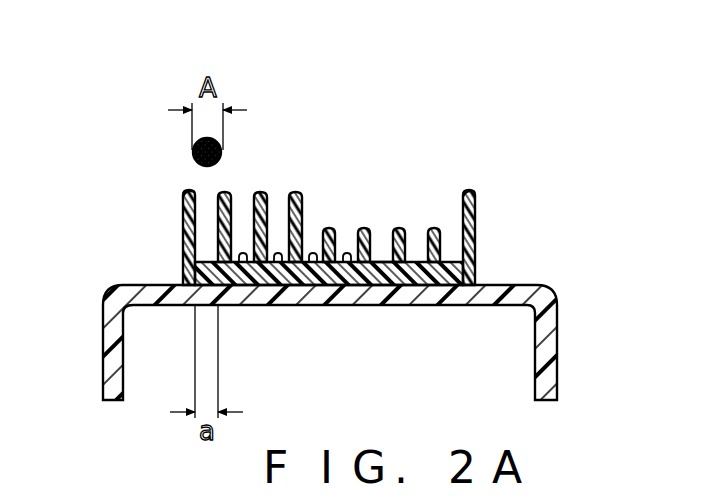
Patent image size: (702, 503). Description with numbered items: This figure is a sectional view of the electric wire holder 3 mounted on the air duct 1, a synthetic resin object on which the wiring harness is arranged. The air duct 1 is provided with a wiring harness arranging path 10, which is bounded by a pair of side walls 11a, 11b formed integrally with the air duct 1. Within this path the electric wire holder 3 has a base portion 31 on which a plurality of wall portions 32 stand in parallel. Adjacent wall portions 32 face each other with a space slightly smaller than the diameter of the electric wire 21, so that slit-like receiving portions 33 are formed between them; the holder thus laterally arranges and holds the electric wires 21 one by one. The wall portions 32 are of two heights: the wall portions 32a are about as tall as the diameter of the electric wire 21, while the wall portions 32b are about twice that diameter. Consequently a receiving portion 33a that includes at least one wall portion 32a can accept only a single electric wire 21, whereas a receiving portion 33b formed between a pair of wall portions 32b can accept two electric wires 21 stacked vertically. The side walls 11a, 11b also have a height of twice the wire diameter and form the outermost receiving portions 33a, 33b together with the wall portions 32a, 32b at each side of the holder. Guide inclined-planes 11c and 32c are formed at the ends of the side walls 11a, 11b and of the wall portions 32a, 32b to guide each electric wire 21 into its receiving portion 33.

The air duct 1 is at (560, 345).
The electric wire holder 3 is at (390, 205).
The wiring harness arranging path 10 is at (319, 217).
The side wall 11a is at (477, 215).
The side wall 11b is at (183, 228).
The guide inclined-plane 11c is at (198, 191).
The electric wire 21 is at (194, 156).
The base portion 31 is at (495, 264).
The wall portions 32 is at (363, 138).
The wall portion 32a is at (332, 226).
The wall portion 32b is at (295, 194).
The guide inclined-plane 32c is at (232, 195).
The receiving portions 33 is at (332, 337).
The receiving portion 33a is at (313, 262).
The receiving portion 33b is at (277, 262).